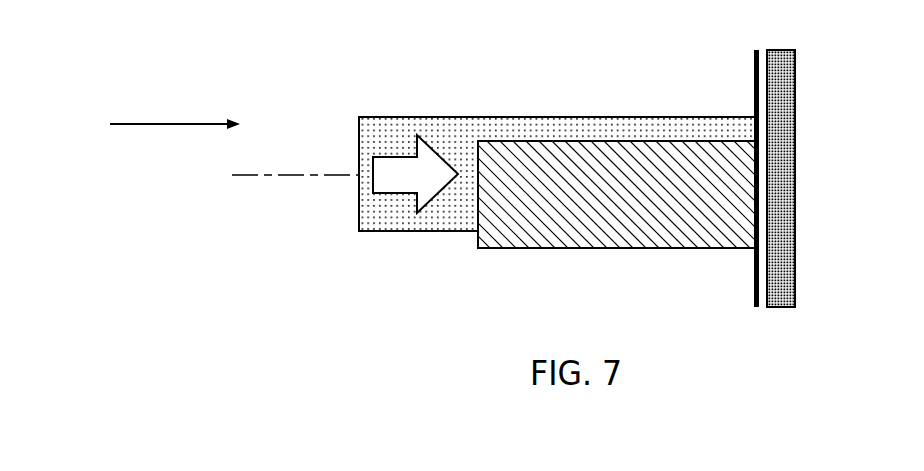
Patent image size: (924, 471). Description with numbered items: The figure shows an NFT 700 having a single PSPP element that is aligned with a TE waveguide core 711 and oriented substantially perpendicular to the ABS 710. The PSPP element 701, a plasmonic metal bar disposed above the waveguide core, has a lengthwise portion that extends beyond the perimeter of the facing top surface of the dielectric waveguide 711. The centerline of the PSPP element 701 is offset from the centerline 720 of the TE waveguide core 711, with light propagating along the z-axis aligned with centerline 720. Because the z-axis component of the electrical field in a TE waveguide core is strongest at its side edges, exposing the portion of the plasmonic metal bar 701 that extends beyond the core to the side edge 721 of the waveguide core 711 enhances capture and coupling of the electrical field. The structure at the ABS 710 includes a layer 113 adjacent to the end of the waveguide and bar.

The NFT 700 is at (295, 49).
The centerline 720 is at (263, 178).
The TE waveguide core 711 is at (400, 231).
The side edge 721 is at (430, 233).
The PSPP element 701 is at (624, 236).
The ABS 710 is at (754, 84).
The gray layer 113 is at (780, 243).